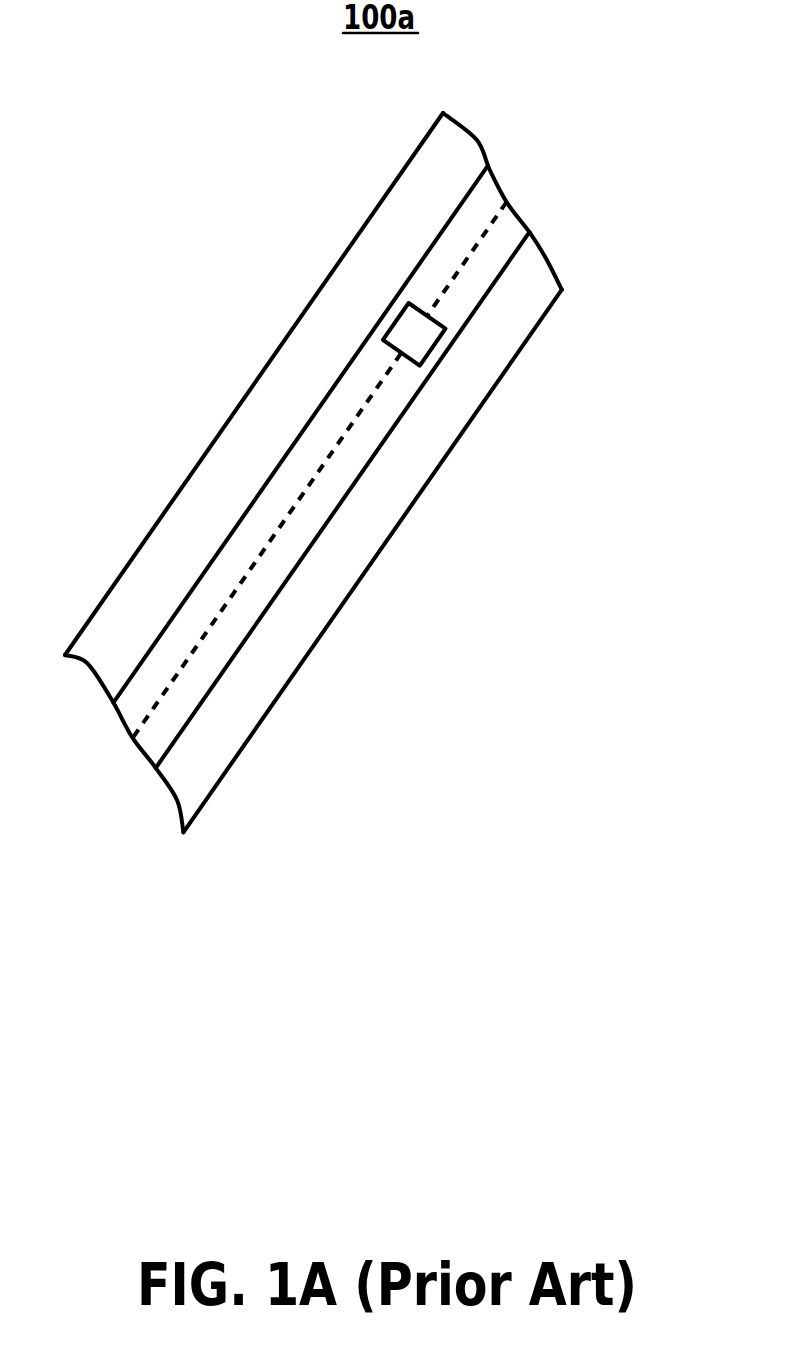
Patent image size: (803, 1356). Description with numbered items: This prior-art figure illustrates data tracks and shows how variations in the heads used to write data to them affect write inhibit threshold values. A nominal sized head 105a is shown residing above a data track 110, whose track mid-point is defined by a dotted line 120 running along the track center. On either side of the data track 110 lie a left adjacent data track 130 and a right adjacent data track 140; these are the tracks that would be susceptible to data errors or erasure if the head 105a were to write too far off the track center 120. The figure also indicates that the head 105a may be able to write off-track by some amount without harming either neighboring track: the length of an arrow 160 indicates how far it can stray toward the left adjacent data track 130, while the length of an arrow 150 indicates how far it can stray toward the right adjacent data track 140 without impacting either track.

The nominal sized head 105a is at (418, 335).
The data track 110 is at (483, 207).
The dotted line 120 is at (467, 269).
The left adjacent data track 130 is at (343, 299).
The right adjacent data track 140 is at (432, 423).
The arrow 150 is at (356, 430).
The arrow 160 is at (357, 408).